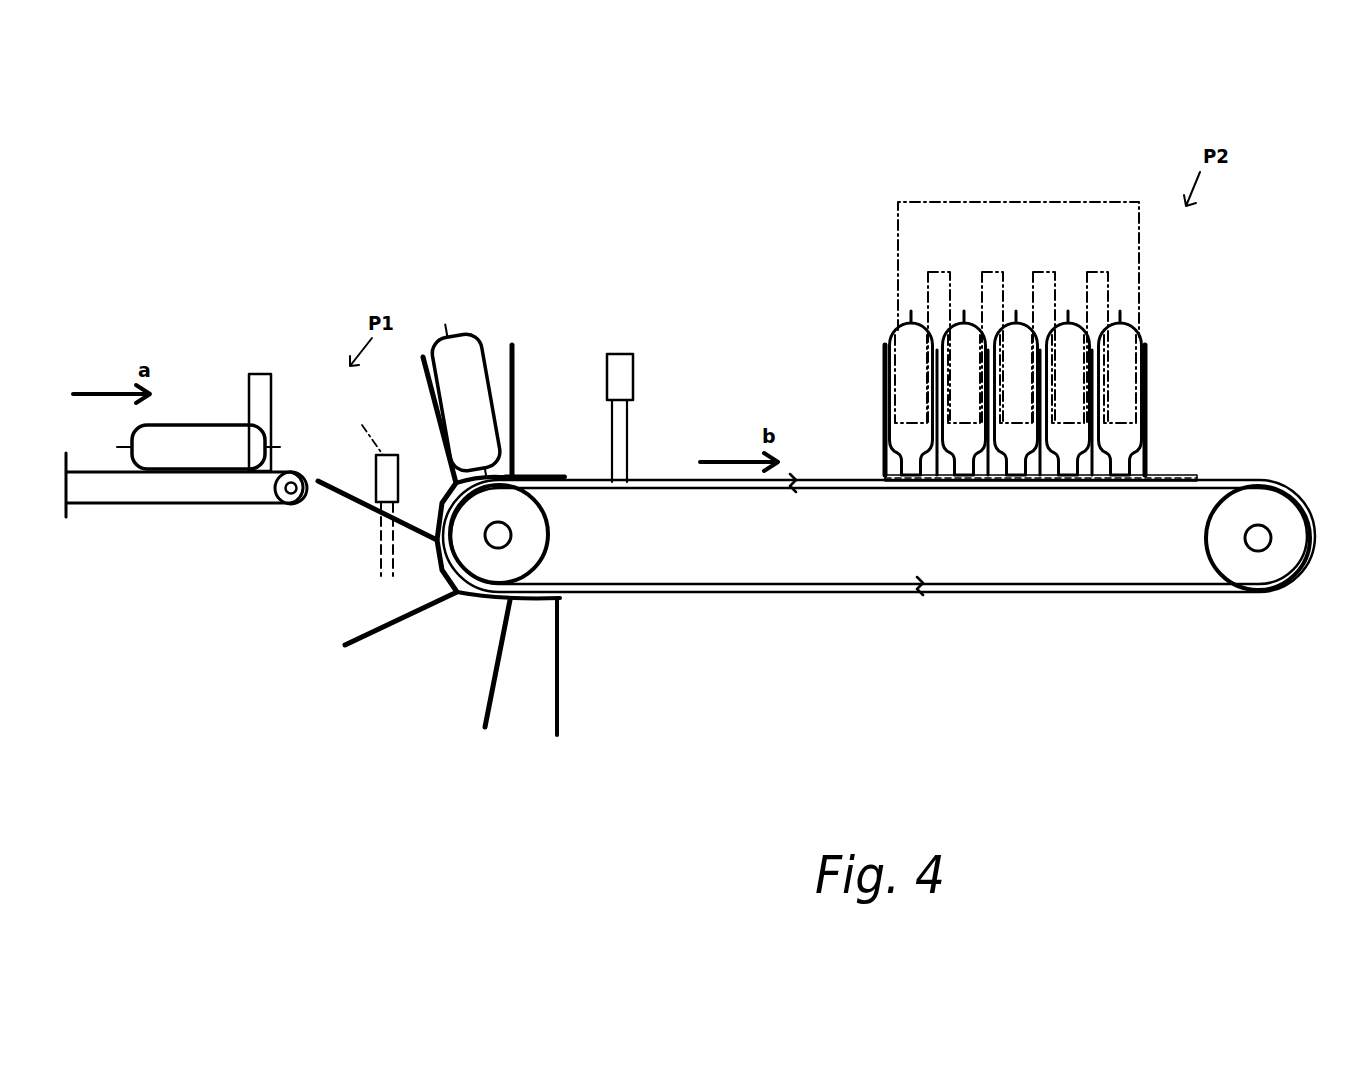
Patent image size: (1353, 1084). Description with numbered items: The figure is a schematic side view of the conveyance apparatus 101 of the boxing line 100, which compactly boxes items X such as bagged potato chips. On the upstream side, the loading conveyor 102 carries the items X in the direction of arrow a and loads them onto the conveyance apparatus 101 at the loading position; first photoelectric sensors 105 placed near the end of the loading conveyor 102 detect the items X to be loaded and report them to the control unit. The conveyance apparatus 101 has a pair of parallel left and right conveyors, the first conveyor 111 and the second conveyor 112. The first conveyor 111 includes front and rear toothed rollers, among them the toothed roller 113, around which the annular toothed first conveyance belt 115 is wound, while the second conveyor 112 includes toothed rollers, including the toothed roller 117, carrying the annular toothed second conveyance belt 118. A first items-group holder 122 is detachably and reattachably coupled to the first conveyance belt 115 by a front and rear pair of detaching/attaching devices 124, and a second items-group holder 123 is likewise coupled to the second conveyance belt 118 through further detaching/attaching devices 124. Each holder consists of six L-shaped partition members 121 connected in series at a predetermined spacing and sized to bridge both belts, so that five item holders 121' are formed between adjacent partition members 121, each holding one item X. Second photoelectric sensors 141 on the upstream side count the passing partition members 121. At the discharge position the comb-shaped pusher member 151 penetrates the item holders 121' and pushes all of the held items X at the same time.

The boxing line 100 is at (470, 215).
The conveyance apparatus 101 is at (995, 673).
The loading conveyor 102 is at (200, 506).
The first photoelectric sensor 105 is at (262, 373).
The first conveyor 111 is at (1236, 477).
The second conveyor 112 is at (676, 597).
The toothed roller 113 is at (1258, 574).
The first conveyance belt 115 is at (1105, 594).
The toothed roller 117 is at (540, 532).
The second conveyance belt 118 is at (795, 594).
The partition member 121 is at (753, 540).
The item holder 121' is at (883, 543).
The first items-group holder 122 is at (1163, 376).
The second items-group holder 123 is at (566, 728).
The detaching/attaching device 124 is at (1196, 480).
The second photoelectric sensor 141 is at (645, 312).
The pusher member 151 is at (1073, 216).
The item X is at (1128, 343).